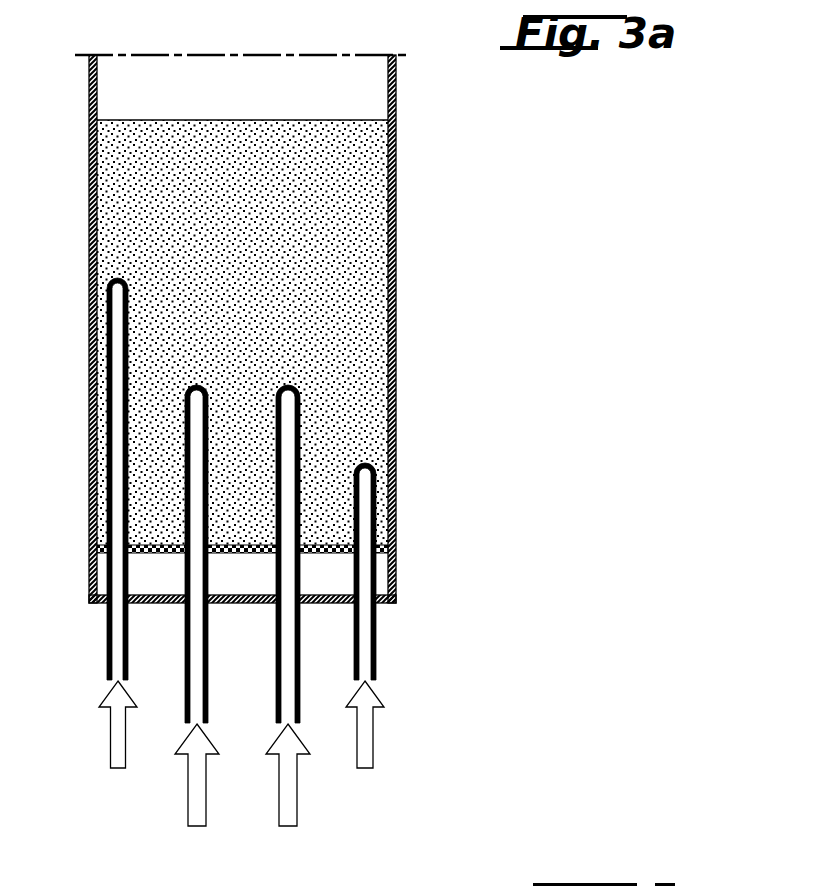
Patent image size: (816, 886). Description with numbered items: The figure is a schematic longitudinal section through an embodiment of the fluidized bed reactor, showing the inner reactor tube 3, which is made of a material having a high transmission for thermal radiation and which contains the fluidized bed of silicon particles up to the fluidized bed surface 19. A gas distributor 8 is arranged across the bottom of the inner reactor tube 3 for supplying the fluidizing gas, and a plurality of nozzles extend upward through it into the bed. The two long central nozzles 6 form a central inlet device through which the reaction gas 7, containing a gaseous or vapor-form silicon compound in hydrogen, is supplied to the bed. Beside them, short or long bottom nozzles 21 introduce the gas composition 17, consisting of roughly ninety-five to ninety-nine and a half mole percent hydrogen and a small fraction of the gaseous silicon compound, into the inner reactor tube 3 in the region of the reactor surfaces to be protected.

The inner reactor tube 3 is at (396, 222).
The central nozzles 6 is at (280, 385).
The reaction gas 7 is at (283, 787).
The gas distributor 8 is at (236, 545).
The gas composition 17 is at (118, 755).
The fluidized bed surface 19 is at (362, 118).
The bottom nozzles 21 is at (122, 281).